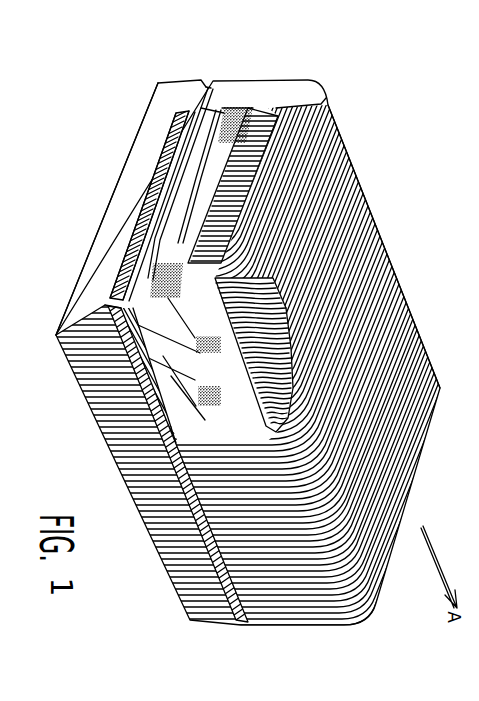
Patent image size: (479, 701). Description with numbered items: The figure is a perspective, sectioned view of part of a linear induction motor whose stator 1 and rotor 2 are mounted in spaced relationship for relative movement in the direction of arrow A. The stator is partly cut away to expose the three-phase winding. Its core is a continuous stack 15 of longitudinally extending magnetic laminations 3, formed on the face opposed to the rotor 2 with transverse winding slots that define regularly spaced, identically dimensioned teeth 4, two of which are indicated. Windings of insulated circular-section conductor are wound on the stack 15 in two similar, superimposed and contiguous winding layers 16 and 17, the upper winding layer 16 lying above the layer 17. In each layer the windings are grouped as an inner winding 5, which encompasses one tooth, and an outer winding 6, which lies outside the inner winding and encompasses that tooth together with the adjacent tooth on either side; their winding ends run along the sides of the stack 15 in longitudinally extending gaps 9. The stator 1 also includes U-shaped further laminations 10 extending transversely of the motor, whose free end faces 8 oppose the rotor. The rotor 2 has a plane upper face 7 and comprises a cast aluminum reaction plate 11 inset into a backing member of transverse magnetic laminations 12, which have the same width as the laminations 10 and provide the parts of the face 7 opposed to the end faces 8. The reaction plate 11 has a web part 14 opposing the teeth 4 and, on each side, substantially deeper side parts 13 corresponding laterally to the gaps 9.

The stator 1 is at (250, 63).
The rotor 2 is at (181, 65).
The magnetic laminations 3 is at (222, 203).
The teeth 4 is at (207, 317).
The inner winding 5 is at (130, 445).
The outer winding 6 is at (120, 410).
The upper face 7 is at (100, 250).
The free end faces 8 is at (200, 78).
The longitudinally extending gaps 9 is at (258, 112).
The further laminations 10 is at (372, 235).
The reaction plate 11 is at (83, 292).
The transverse magnetic laminations 12 is at (83, 373).
The side parts 13 is at (170, 117).
The web part 14 is at (157, 153).
The stack 15 is at (228, 118).
The upper winding layer 16 is at (165, 207).
The winding layer 17 is at (127, 253).